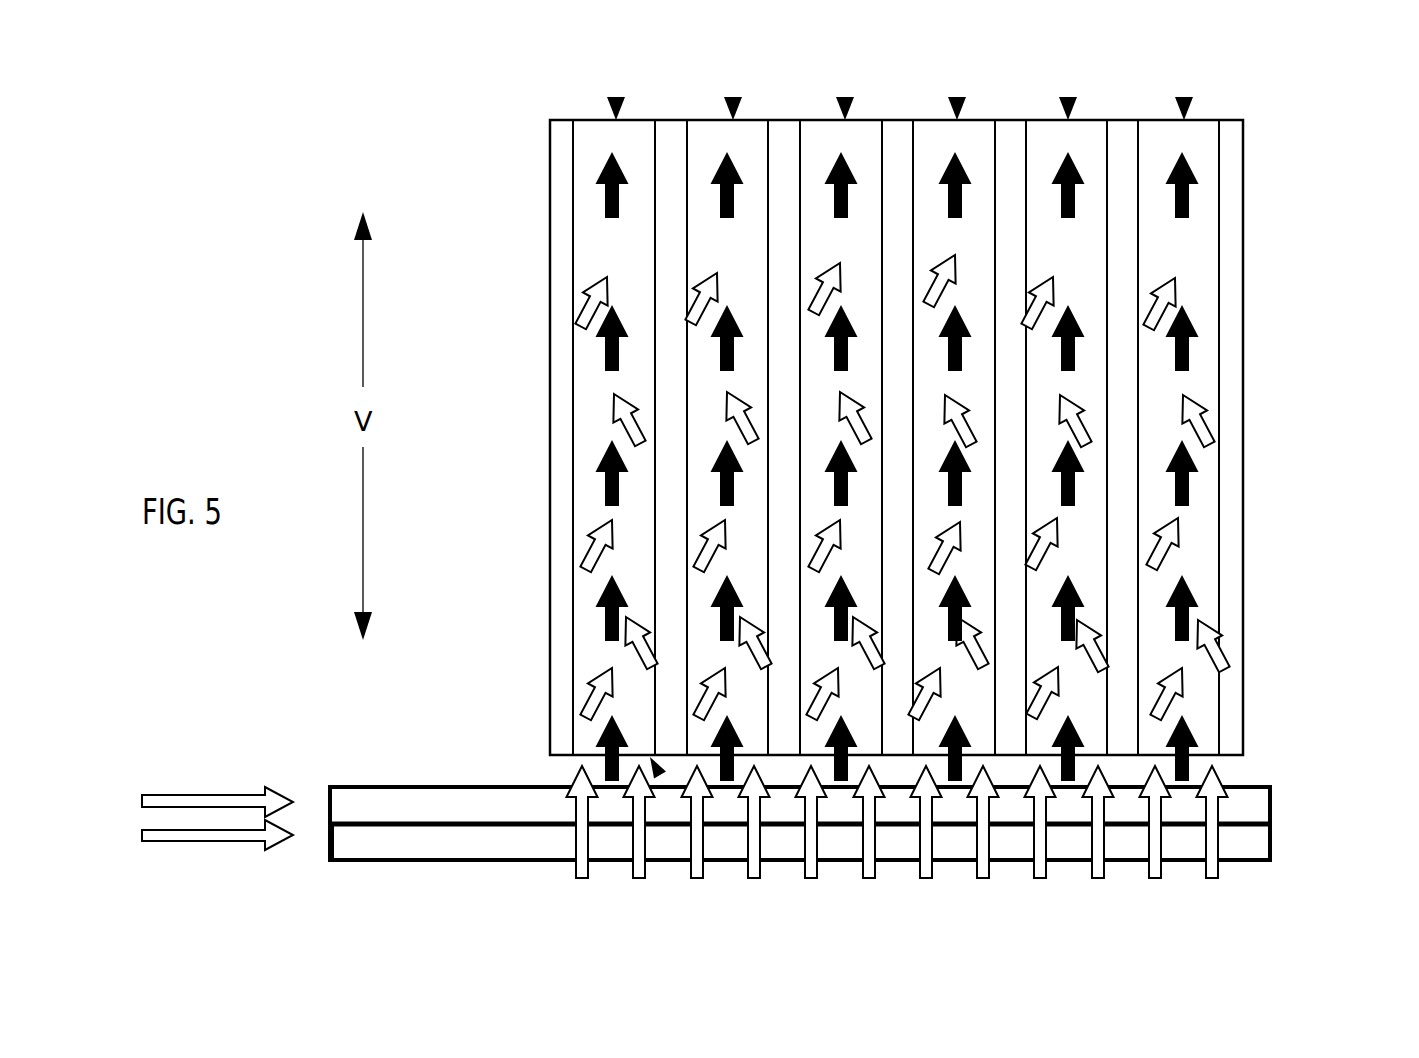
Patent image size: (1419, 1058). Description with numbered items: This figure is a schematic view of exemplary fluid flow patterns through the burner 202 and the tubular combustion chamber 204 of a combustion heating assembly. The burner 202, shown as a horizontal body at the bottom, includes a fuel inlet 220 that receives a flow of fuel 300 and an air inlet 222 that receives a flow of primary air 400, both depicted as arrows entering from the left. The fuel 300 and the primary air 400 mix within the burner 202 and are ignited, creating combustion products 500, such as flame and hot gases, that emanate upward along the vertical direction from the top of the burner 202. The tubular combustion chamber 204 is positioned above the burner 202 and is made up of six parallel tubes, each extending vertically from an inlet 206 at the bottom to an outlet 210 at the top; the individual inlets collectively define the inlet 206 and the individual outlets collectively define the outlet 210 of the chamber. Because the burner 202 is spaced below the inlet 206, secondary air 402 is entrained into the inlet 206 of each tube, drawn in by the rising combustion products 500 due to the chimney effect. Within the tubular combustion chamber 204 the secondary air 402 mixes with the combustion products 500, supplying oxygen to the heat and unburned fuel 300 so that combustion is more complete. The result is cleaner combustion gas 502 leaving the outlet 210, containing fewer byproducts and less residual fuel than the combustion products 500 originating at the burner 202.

The burner 202 is at (473, 848).
The tubular combustion chamber 204 is at (1292, 381).
The inlet 206 is at (660, 775).
The outlet 210 is at (616, 97).
The fuel inlet 220 is at (330, 797).
The air inlet 222 is at (330, 850).
The fuel 300 is at (205, 795).
The primary air 400 is at (178, 845).
The secondary air 402 is at (578, 305).
The combustion products 500 is at (607, 352).
The combustion gas 502 is at (600, 192).